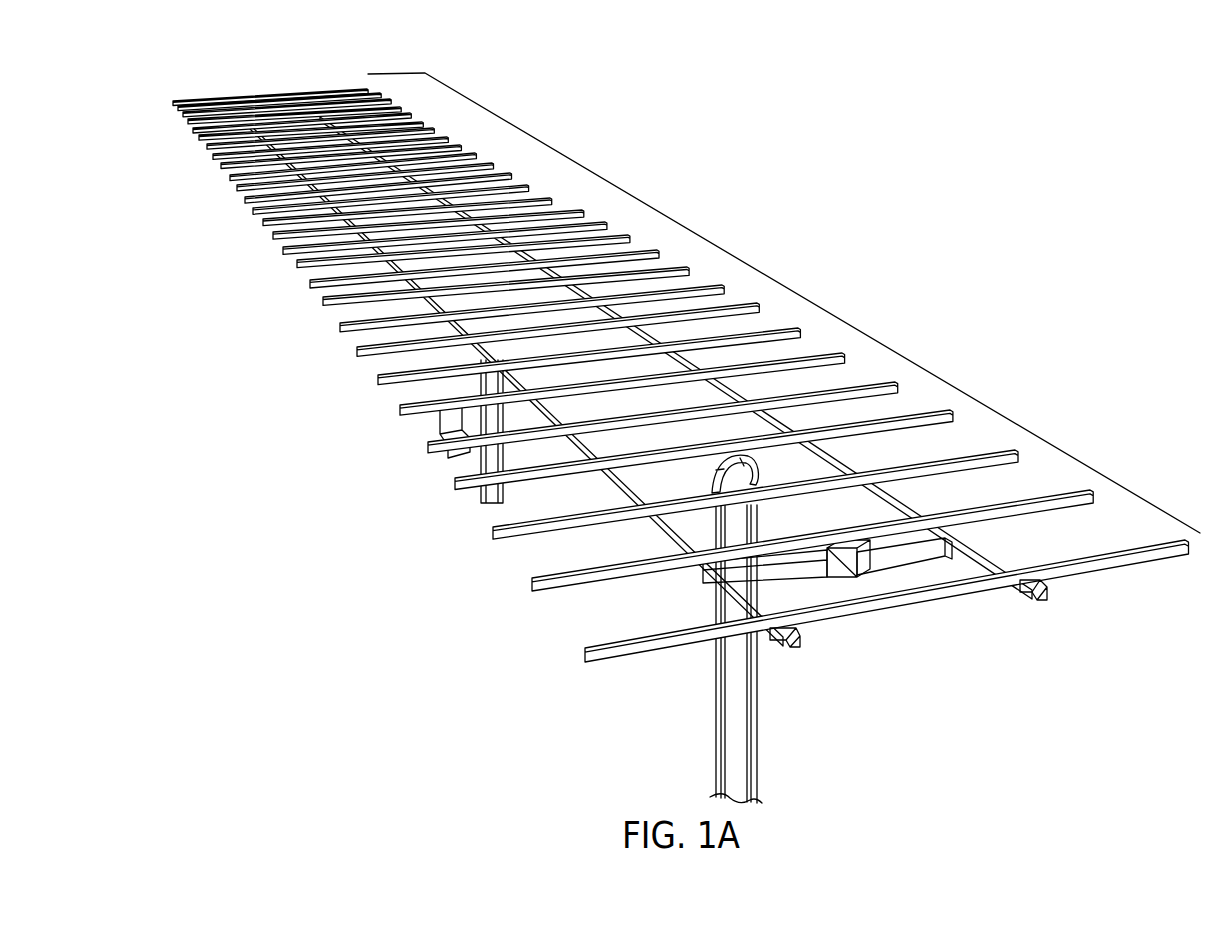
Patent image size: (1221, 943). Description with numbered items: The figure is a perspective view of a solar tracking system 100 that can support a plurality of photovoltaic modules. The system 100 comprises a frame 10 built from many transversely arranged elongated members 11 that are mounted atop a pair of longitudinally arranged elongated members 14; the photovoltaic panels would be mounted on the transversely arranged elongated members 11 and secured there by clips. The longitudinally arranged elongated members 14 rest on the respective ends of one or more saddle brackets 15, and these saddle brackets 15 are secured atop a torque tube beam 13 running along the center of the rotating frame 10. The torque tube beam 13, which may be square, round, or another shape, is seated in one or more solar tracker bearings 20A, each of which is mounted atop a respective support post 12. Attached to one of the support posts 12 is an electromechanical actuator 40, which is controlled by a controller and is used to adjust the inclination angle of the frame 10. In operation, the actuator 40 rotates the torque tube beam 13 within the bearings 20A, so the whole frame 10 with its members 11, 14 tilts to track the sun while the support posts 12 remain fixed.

The solar tracking system 100 is at (1063, 190).
The frame 10 is at (779, 274).
The transversely arranged elongated members 11 is at (840, 607).
The support posts 12 is at (753, 742).
The torque tube beam 13 is at (848, 580).
The longitudinally arranged elongated members 14 is at (780, 645).
The saddle brackets 15 is at (912, 553).
The solar tracker bearings 20A is at (712, 481).
The electromechanical actuator 40 is at (440, 424).